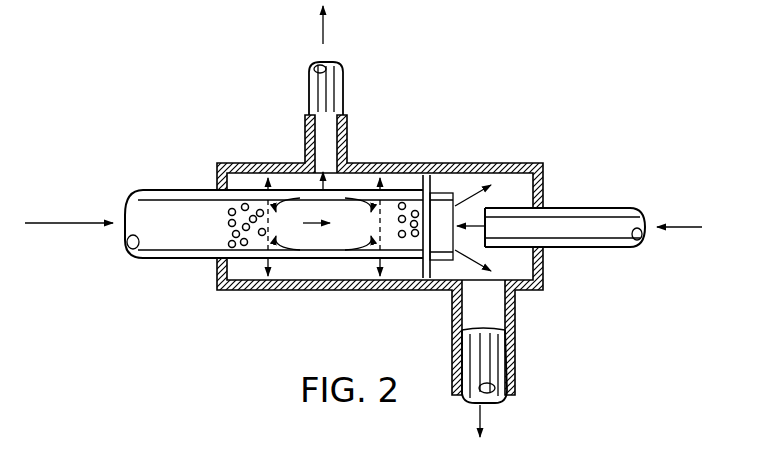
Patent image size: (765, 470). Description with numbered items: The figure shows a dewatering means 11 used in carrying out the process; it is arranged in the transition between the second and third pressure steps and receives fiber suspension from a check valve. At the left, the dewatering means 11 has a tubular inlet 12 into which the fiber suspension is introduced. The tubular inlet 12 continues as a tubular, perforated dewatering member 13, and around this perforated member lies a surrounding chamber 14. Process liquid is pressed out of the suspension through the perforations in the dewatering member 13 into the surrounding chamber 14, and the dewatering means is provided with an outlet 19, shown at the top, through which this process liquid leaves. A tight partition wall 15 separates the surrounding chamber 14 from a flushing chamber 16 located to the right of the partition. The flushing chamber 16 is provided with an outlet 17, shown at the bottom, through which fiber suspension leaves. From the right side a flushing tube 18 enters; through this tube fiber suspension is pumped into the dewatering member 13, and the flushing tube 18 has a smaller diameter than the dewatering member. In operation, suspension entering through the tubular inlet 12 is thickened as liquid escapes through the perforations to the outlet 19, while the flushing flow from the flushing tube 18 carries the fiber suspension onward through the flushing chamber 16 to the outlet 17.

The dewatering means 11 is at (253, 159).
The tubular inlet 12 is at (193, 248).
The perforated dewatering member 13 is at (290, 268).
The surrounding chamber 14 is at (340, 283).
The tight partition wall 15 is at (418, 265).
The flushing chamber 16 is at (510, 265).
The outlet 17 is at (515, 355).
The flushing tube 18 is at (607, 208).
The outlet for process liquid 19 is at (347, 77).